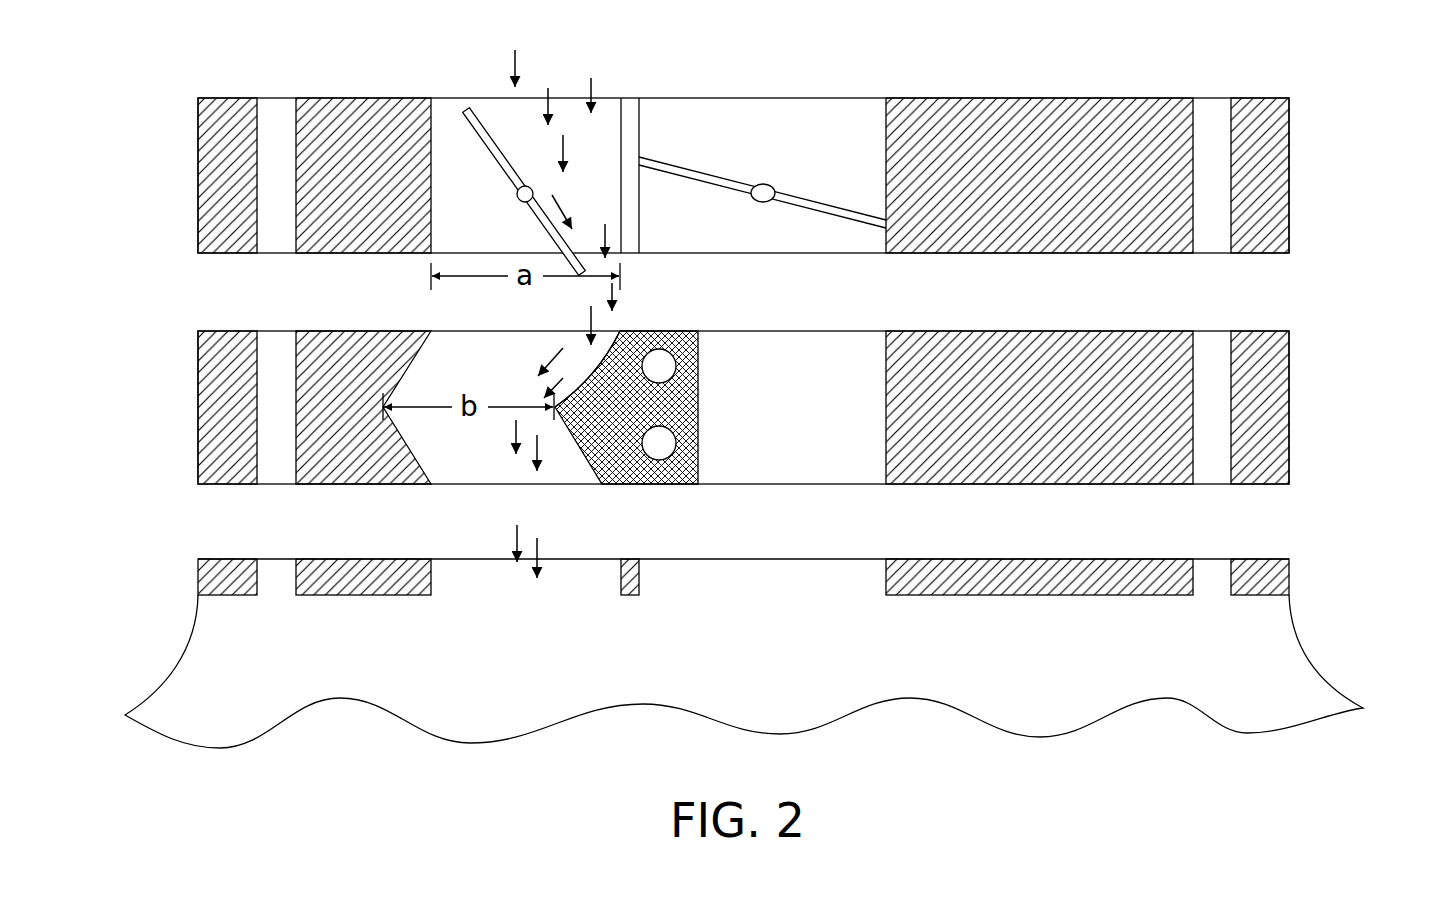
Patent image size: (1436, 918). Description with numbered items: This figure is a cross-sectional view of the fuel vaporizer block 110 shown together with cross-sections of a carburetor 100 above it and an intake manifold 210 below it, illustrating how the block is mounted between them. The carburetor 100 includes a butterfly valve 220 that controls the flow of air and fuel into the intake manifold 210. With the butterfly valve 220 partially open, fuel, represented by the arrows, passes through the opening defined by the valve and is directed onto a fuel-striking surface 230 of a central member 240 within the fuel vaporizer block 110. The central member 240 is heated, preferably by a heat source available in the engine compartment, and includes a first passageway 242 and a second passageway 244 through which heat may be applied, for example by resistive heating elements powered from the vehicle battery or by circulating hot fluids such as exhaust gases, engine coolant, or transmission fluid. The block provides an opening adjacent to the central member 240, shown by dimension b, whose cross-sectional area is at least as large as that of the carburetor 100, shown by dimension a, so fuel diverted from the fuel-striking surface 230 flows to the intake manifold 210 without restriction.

The carburetor 100 is at (1289, 170).
The fuel vaporizer block 110 is at (1289, 402).
The intake manifold 210 is at (1289, 573).
The butterfly valve 220 is at (475, 134).
The fuel-striking surface 230 is at (606, 362).
The central member 240 is at (698, 408).
The first passageway 242 is at (698, 370).
The second passageway 244 is at (698, 447).